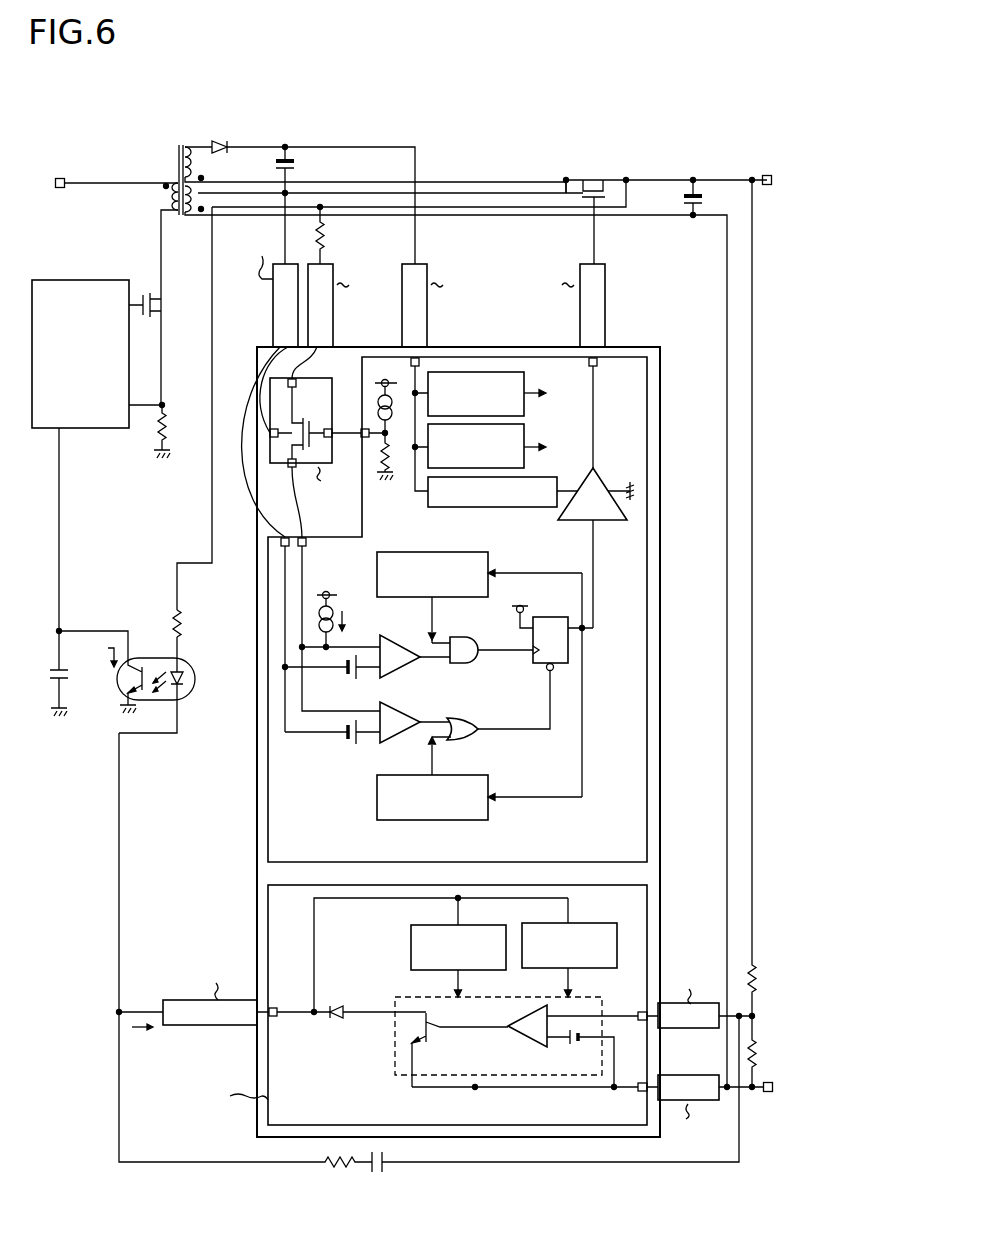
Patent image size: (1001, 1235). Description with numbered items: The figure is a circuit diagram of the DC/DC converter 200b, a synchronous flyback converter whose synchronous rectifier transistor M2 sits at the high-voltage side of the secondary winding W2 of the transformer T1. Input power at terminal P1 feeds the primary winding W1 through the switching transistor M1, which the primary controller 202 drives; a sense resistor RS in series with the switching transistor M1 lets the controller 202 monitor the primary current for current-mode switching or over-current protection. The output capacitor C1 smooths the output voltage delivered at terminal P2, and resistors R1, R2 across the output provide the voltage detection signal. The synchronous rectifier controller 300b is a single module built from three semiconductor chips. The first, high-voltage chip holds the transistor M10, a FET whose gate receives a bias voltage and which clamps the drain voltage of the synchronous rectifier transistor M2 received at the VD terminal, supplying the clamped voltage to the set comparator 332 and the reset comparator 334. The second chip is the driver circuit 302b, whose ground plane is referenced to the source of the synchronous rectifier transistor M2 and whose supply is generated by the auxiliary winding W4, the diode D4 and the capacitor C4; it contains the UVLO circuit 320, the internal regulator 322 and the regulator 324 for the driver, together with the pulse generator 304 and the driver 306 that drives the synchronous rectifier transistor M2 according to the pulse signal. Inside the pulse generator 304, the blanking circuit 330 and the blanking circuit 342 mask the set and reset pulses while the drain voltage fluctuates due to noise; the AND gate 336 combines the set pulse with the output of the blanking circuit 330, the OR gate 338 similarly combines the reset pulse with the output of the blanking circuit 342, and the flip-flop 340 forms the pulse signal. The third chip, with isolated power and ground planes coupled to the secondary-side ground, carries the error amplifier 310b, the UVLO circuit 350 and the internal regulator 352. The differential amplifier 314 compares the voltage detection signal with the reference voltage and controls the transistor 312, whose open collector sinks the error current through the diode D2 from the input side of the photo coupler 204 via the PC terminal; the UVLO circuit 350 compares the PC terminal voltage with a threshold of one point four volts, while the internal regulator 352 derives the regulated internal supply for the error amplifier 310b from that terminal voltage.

The DC/DC converter 200b is at (585, 109).
The primary controller 202 is at (87, 288).
The photo coupler 204 is at (149, 655).
The synchronous rectifier controller 300b is at (647, 347).
The driver circuit 302b is at (268, 788).
The pulse generator 304 is at (462, 682).
The driver 306 is at (604, 478).
The error amplifier 310b is at (483, 1042).
The transistor 312 is at (437, 1038).
The differential amplifier 314 is at (518, 1050).
The UVLO circuit 320 is at (530, 430).
The internal regulator 322 is at (530, 378).
The regulator for the driver 324 is at (520, 510).
The blanking circuit 330 is at (415, 552).
The set comparator 332 is at (400, 644).
The reset comparator 334 is at (400, 709).
The AND gate 336 is at (463, 637).
The OR gate 338 is at (463, 718).
The flip-flop 340 is at (535, 658).
The blanking circuit 342 is at (452, 770).
The UVLO circuit 350 is at (468, 915).
The internal regulator 352 is at (582, 915).
The transformer T1 is at (179, 145).
The primary winding W1 is at (158, 191).
The secondary winding W2 is at (192, 219).
The auxiliary winding W4 is at (203, 163).
The diode D4 is at (223, 135).
The capacitor C4 is at (300, 163).
The output capacitor C1 is at (682, 201).
The switching transistor M1 is at (165, 302).
The synchronous rectifier transistor M2 is at (593, 177).
The transistor M10 is at (306, 419).
The input terminal P1 is at (58, 189).
The output terminal P2 is at (770, 189).
The resistor R1 is at (760, 977).
The resistor R2 is at (760, 1052).
The sense resistor RS is at (170, 428).
The diode D2 is at (338, 1004).
The VD terminal VD is at (333, 240).